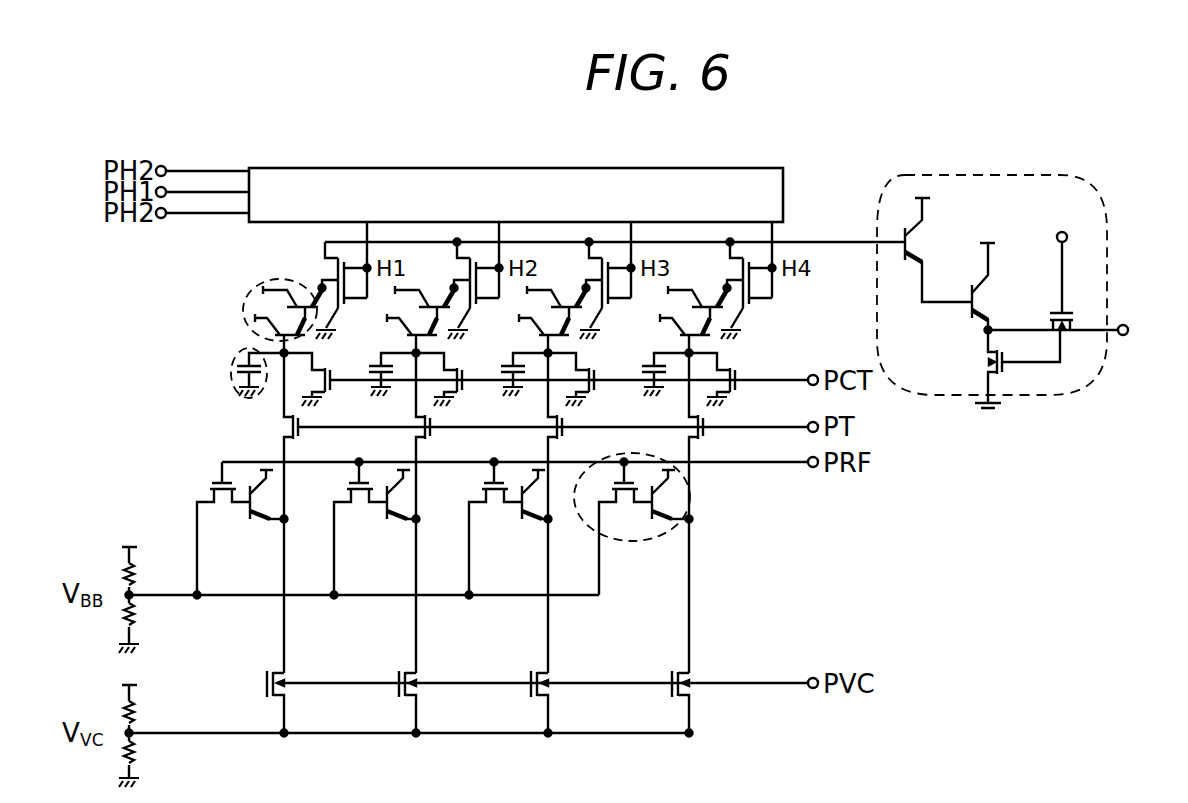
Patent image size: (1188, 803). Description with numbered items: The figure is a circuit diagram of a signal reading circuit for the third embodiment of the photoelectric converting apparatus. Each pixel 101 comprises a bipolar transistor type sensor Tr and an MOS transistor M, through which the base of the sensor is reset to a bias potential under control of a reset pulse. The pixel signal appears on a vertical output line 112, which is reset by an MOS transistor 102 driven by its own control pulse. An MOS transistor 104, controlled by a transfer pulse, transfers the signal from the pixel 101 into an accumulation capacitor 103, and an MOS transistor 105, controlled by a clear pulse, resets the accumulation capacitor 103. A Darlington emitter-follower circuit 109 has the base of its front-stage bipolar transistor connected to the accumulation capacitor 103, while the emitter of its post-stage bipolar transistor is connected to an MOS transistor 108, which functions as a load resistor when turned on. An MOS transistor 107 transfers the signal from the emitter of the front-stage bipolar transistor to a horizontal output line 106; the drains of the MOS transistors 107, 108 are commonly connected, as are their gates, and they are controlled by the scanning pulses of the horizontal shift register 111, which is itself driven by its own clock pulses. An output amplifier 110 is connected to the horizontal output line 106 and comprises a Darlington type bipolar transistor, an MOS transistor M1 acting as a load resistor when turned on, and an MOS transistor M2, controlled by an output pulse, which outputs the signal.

The pixel 101 is at (679, 524).
The MOS transistor 102 is at (700, 676).
The accumulation capacitor 103 is at (232, 352).
The MOS transistor 104 is at (308, 432).
The MOS transistor 105 is at (334, 388).
The horizontal output line 106 is at (818, 241).
The MOS transistor 107 is at (322, 266).
The MOS transistor 108 is at (347, 312).
The Darlington emitter-follower circuit 109 is at (250, 285).
The output amplifier 110 is at (1032, 266).
The horizontal shift register 111 is at (727, 82).
The vertical output line 112 is at (283, 566).
The MOS transistor M is at (622, 522).
The bipolar transistor type sensor Tr is at (660, 525).
The MOS transistor M1 is at (978, 357).
The MOS transistor M2 is at (1048, 313).